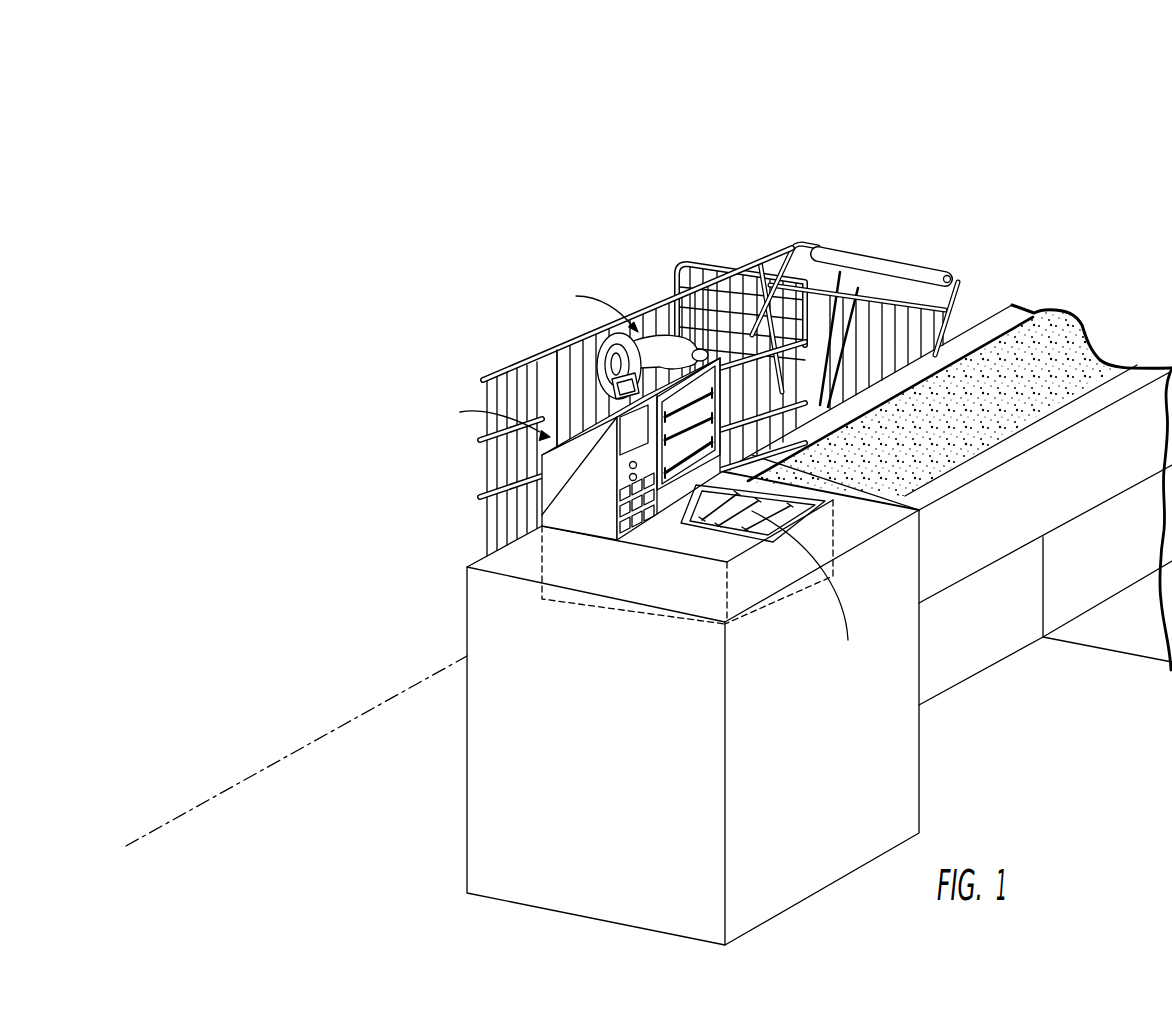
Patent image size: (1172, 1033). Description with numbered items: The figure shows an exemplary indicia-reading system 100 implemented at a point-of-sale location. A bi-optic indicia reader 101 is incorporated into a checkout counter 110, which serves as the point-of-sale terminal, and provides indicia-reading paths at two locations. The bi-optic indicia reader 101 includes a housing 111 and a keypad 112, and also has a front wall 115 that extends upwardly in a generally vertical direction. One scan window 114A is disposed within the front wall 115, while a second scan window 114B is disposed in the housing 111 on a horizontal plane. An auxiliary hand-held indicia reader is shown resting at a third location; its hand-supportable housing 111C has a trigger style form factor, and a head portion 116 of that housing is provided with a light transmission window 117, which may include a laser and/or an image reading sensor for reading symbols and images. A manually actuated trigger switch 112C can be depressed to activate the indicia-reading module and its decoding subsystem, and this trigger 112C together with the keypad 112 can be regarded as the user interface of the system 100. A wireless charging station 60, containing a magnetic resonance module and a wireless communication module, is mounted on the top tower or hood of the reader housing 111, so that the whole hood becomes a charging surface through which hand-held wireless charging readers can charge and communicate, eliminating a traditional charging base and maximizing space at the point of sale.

The indicia-reading system 100 is at (1022, 148).
The checkout counter 110 is at (1008, 310).
The keypad 112 is at (640, 512).
The housing 111 is at (542, 506).
The hand-supportable housing 111C is at (642, 338).
The trigger switch 112C is at (580, 374).
The wireless charging station 60 is at (718, 362).
The scan window 114A is at (682, 348).
The scan window 114B is at (713, 537).
The front wall 115 is at (678, 452).
The head portion 116 is at (517, 395).
The light transmission window 117 is at (563, 483).
The bi-optic indicia reader 101 is at (593, 387).